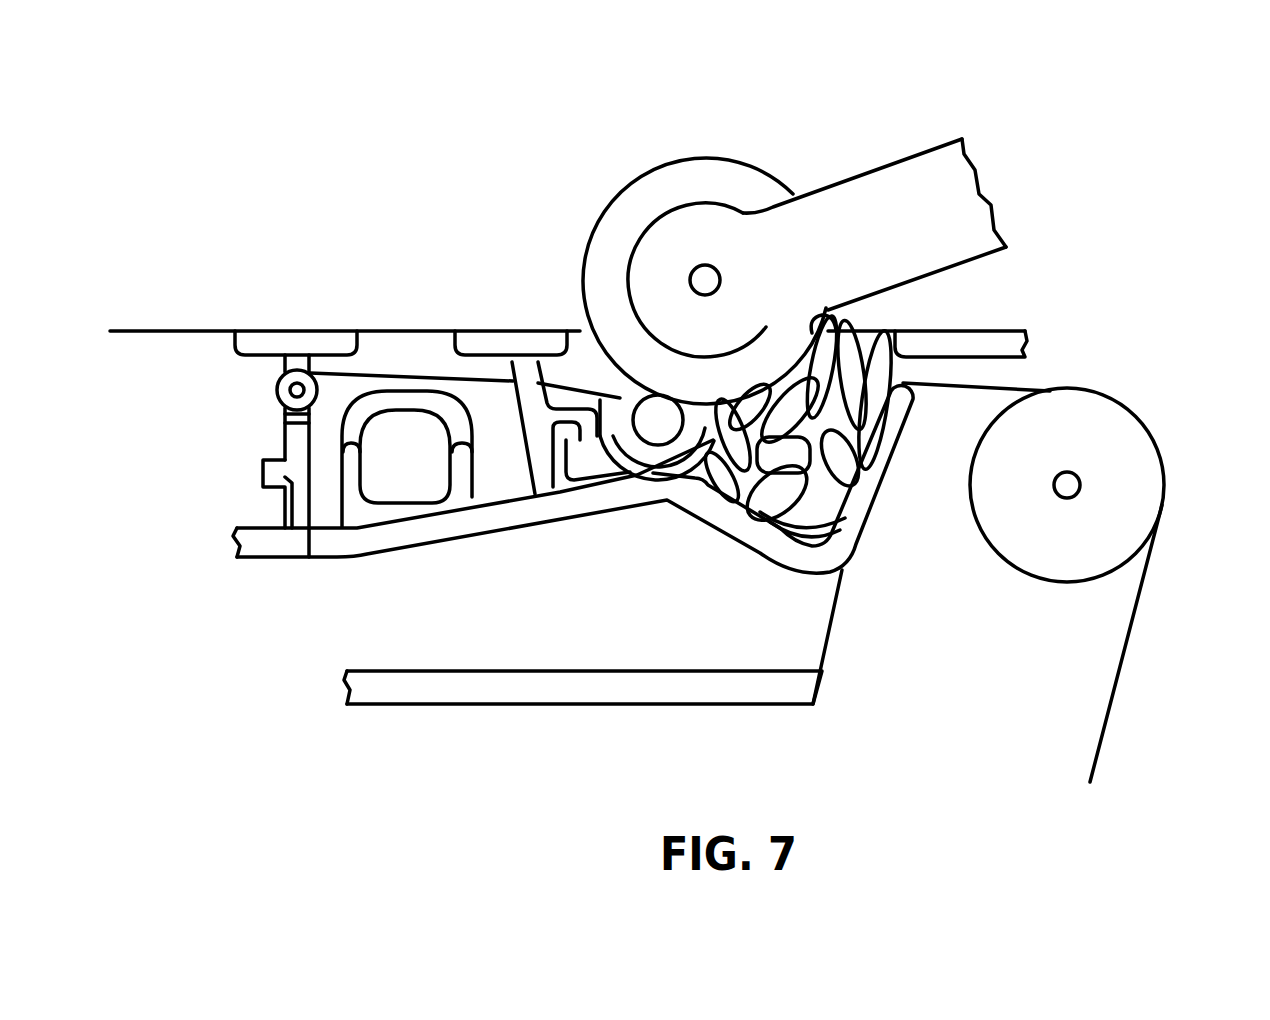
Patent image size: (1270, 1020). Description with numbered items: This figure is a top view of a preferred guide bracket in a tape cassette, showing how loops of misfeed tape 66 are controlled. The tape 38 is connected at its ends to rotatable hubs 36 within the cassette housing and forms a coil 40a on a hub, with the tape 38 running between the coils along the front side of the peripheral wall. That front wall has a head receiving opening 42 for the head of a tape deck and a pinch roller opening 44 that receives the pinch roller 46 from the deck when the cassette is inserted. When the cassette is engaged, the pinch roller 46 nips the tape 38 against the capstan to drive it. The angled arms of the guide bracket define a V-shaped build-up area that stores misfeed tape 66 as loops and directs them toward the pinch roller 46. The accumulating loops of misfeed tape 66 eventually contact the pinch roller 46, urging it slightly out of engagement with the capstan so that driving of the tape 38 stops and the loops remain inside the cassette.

The rotatable hub 36 is at (1067, 472).
The tape 38 is at (1117, 685).
The coil of tape 40a is at (1148, 483).
The head receiving opening 42 is at (403, 347).
The pinch roller opening 44 is at (580, 347).
The pinch roller 46 is at (715, 160).
The misfeed tape 66 is at (833, 473).